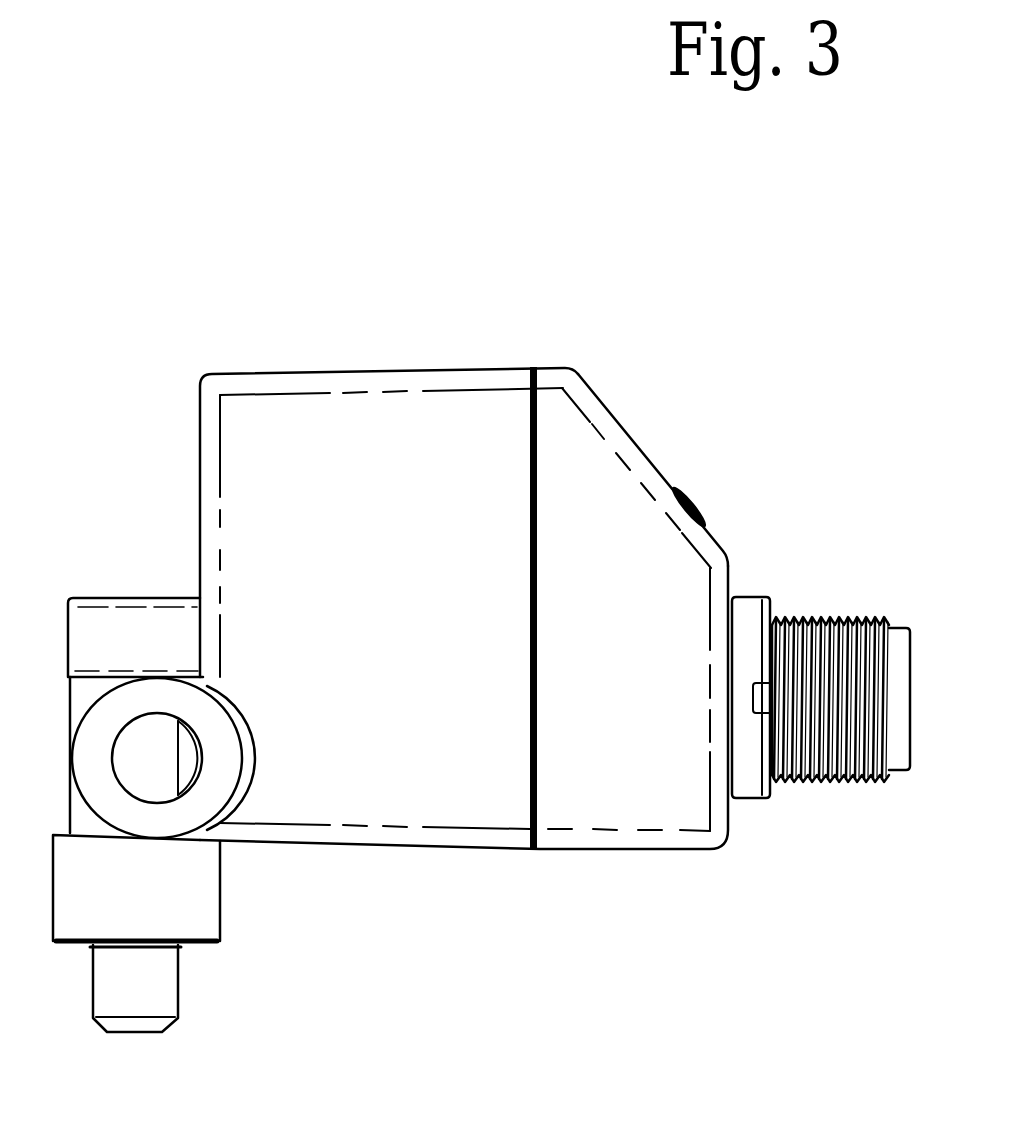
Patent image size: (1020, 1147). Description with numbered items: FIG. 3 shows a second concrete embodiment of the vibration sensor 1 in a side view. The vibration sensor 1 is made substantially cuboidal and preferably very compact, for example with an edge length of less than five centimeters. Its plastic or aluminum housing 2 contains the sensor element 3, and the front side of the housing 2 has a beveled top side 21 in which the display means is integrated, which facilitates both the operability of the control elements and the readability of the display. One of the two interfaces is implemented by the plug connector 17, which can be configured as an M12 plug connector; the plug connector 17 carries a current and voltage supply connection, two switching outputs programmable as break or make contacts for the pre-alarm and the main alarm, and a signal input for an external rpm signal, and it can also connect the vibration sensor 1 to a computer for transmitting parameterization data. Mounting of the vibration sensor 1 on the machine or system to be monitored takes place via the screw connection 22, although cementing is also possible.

The vibration sensor 1 is at (227, 232).
The housing 2 is at (383, 372).
The beveled top side 21 is at (604, 405).
The sensor element 3 is at (703, 512).
The plug connector 17 is at (833, 782).
The screw connection 22 is at (162, 1000).